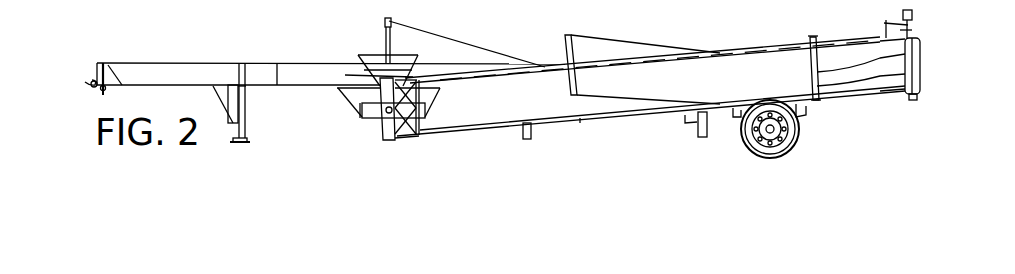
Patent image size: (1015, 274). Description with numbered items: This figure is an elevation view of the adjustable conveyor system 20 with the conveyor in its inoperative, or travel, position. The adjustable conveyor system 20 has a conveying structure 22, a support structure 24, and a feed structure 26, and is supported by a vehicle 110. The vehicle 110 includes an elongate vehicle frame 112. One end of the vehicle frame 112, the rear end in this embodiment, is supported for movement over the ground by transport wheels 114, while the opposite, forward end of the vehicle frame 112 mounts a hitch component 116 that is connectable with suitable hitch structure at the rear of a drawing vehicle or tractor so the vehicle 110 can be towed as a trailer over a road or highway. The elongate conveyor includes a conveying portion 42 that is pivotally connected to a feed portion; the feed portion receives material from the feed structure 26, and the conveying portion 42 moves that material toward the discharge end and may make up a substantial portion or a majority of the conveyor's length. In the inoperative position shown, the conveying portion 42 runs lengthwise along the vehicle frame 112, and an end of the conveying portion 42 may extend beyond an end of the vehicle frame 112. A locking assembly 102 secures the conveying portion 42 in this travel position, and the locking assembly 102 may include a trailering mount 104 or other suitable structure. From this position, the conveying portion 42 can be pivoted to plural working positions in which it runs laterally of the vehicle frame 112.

The adjustable conveyor system 20 is at (760, 26).
The conveying structure 22 is at (878, 115).
The support structure 24 is at (452, 25).
The feed structure 26 is at (344, 55).
The conveying portion 42 is at (614, 132).
The locking assembly 102 is at (907, 51).
The trailering mount 104 is at (907, 75).
The vehicle 110 is at (171, 43).
The vehicle frame 112 is at (312, 75).
The transport wheels 114 is at (797, 138).
The hitch component 116 is at (90, 88).